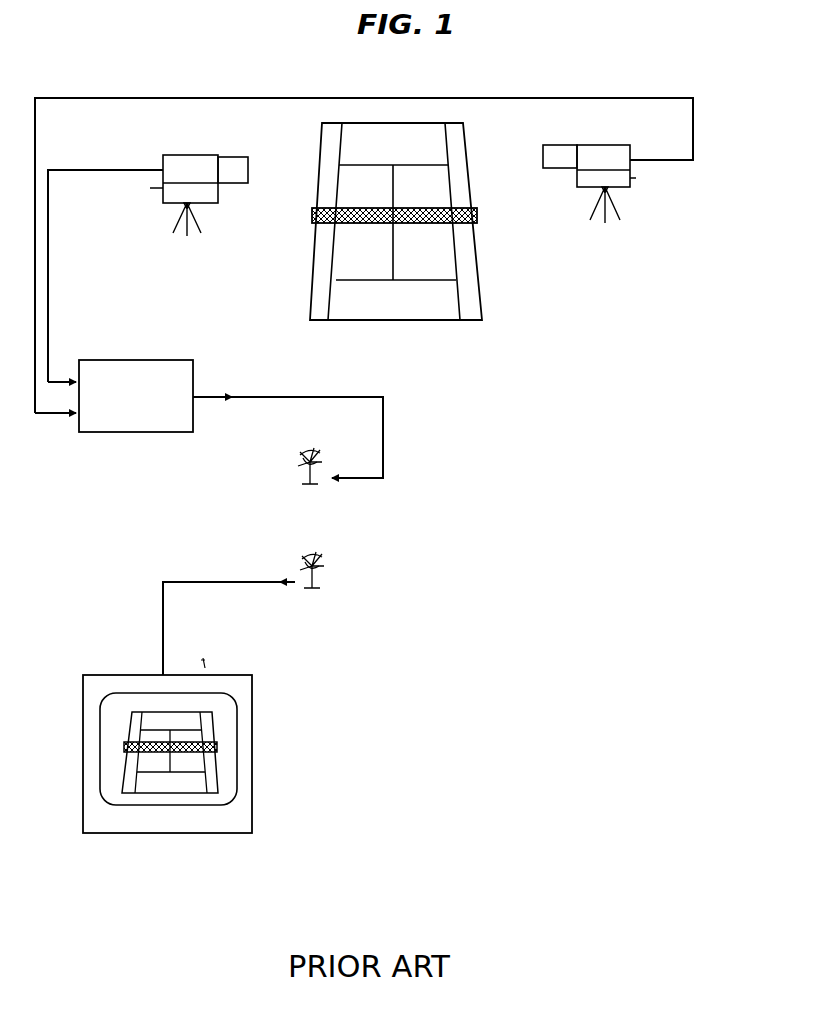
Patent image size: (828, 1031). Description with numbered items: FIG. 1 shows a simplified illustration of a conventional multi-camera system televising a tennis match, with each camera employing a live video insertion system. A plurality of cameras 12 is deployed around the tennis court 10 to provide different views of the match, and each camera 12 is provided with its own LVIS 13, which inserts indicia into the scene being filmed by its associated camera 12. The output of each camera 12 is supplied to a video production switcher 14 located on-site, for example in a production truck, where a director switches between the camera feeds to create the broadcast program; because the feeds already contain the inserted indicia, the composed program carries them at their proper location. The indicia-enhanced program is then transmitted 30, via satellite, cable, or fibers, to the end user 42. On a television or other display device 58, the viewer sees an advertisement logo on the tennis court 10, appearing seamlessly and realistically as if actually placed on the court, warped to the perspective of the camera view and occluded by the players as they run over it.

The tennis court 10 is at (435, 140).
The camera 12 is at (610, 145).
The LVIS 13 is at (630, 192).
The video production switcher 14 is at (133, 360).
The transmission 30 is at (318, 462).
The end user 42 is at (303, 560).
The display device 58 is at (199, 783).